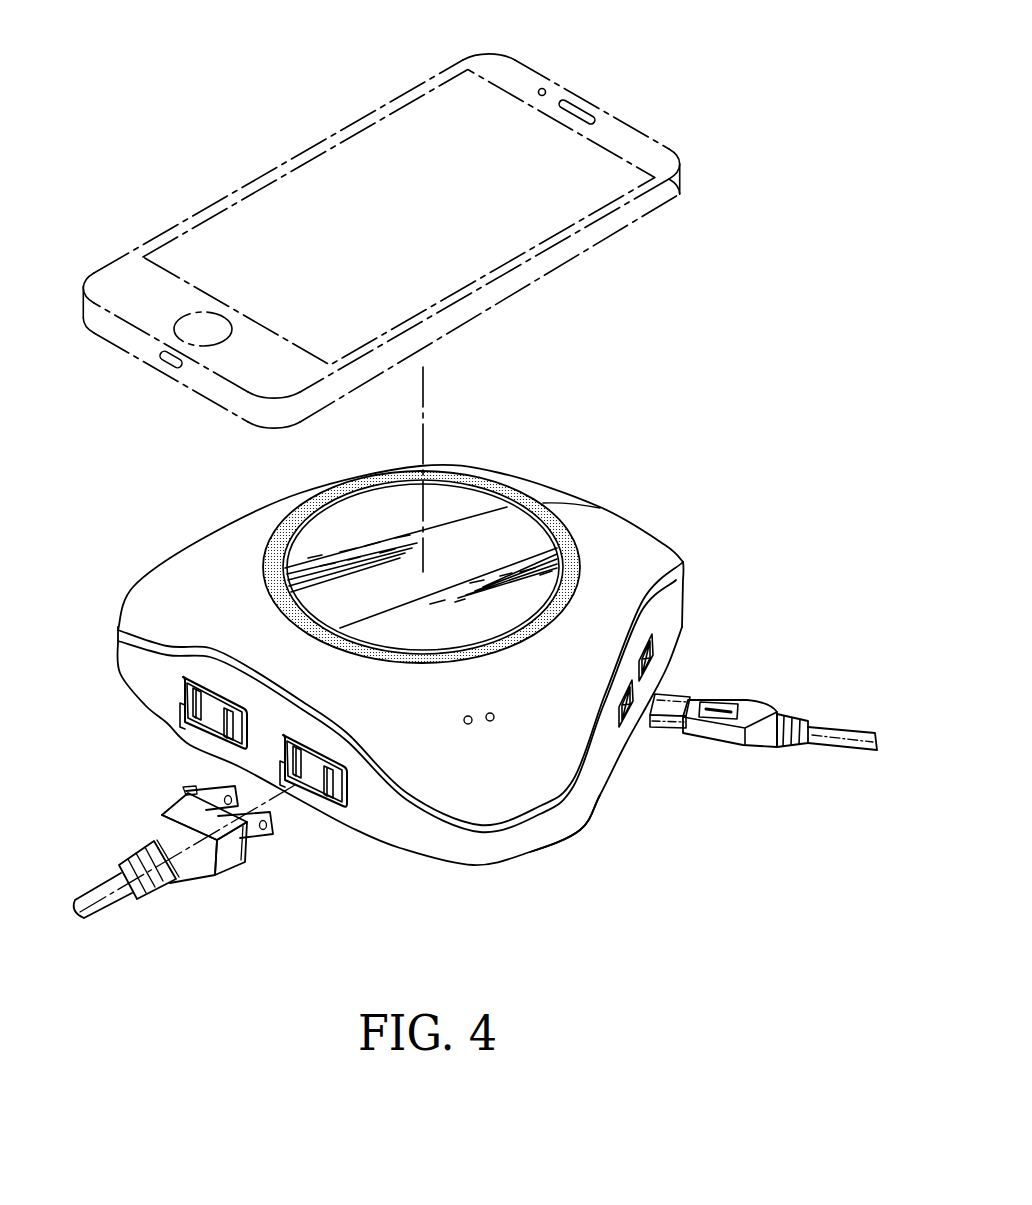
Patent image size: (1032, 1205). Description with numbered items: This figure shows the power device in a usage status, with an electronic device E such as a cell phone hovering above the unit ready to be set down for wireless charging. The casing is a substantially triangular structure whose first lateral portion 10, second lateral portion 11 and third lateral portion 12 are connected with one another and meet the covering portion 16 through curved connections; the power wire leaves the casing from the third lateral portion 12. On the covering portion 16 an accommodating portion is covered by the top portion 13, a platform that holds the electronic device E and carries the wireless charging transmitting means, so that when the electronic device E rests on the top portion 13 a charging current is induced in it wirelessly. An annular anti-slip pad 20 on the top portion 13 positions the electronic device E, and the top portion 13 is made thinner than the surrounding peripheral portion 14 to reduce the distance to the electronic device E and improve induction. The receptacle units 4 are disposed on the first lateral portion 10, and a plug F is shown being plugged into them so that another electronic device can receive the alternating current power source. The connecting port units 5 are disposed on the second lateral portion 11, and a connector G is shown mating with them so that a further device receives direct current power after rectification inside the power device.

The electronic device E is at (623, 115).
The receptacle units 4 is at (213, 717).
The connecting port units 5 is at (642, 662).
The first lateral portion 10 is at (268, 748).
The second lateral portion 11 is at (608, 757).
The third lateral portion 12 is at (522, 478).
The top portion 13 is at (452, 512).
The peripheral portion 14 is at (602, 823).
The covering portion 16 is at (612, 542).
The anti-slip pad 20 is at (270, 547).
The plug F is at (227, 857).
The connector G is at (740, 700).